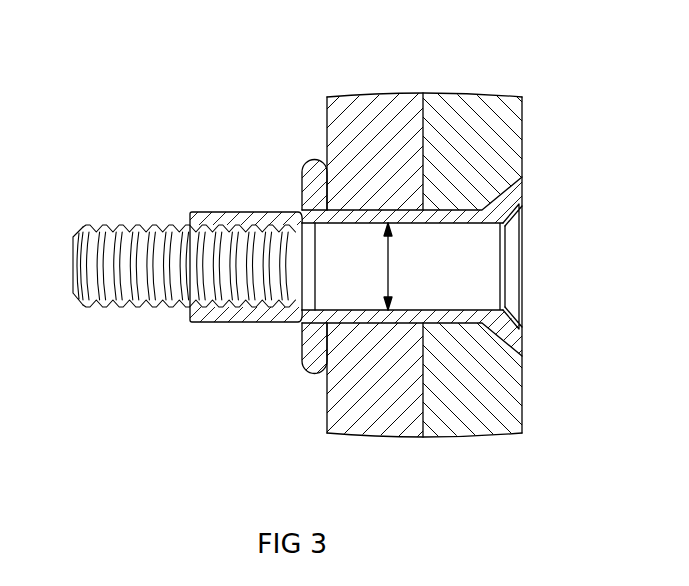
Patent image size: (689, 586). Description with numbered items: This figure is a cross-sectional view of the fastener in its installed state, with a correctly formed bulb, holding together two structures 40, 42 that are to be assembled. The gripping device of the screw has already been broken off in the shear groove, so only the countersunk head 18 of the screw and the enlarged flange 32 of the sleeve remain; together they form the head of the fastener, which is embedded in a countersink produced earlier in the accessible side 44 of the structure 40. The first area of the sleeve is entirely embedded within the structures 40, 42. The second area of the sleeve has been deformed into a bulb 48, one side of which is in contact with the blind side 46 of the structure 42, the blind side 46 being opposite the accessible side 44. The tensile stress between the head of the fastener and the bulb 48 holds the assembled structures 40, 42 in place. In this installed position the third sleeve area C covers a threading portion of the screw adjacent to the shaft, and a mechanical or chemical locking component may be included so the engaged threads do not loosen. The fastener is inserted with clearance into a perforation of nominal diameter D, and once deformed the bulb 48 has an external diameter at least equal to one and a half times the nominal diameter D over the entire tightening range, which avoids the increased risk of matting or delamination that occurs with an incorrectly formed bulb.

The structure 40 is at (396, 231).
The structure 42 is at (375, 95).
The accessible side 44 is at (522, 383).
The bulb 48 is at (315, 158).
The blind side 46 is at (327, 398).
The enlarged flange 32 is at (522, 183).
The countersunk head 18 is at (522, 265).
The third sleeve area C is at (230, 215).
The nominal diameter D is at (407, 266).